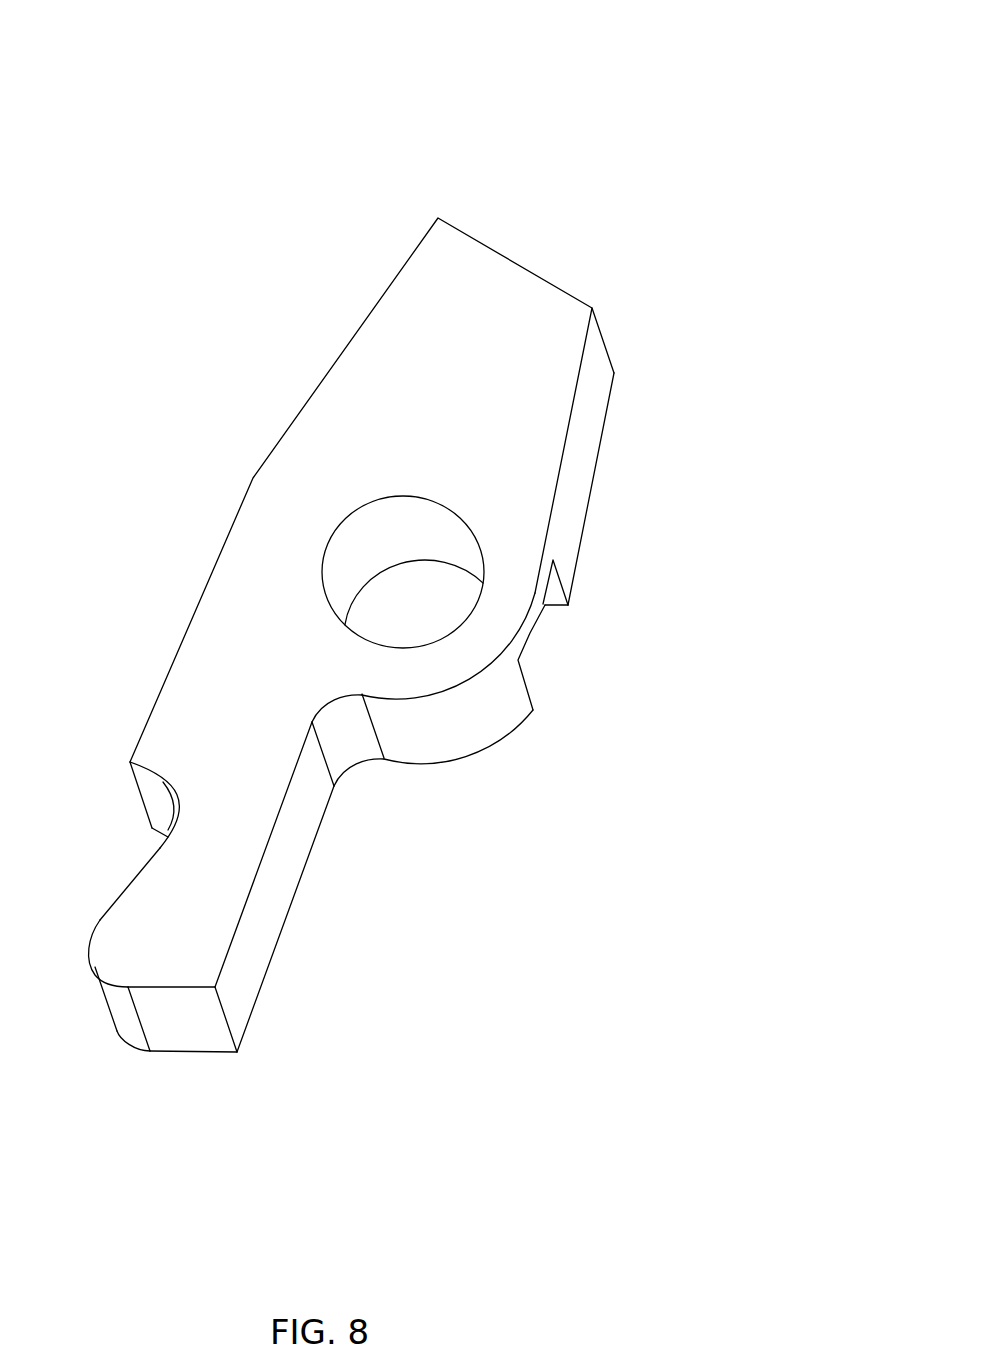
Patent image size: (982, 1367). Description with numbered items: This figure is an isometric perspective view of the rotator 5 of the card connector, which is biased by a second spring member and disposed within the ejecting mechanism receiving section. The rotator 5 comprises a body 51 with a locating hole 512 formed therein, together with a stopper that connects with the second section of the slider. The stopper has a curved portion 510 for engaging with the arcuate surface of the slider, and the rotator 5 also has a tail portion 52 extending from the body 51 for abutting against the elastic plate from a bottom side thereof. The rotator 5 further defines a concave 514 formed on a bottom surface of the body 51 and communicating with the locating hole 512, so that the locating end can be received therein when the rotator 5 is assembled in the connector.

The rotator 5 is at (405, 49).
The body 51 is at (436, 508).
The curved portion 510 is at (482, 722).
The locating hole 512 is at (405, 607).
The concave 514 is at (552, 627).
The tail portion 52 is at (225, 900).